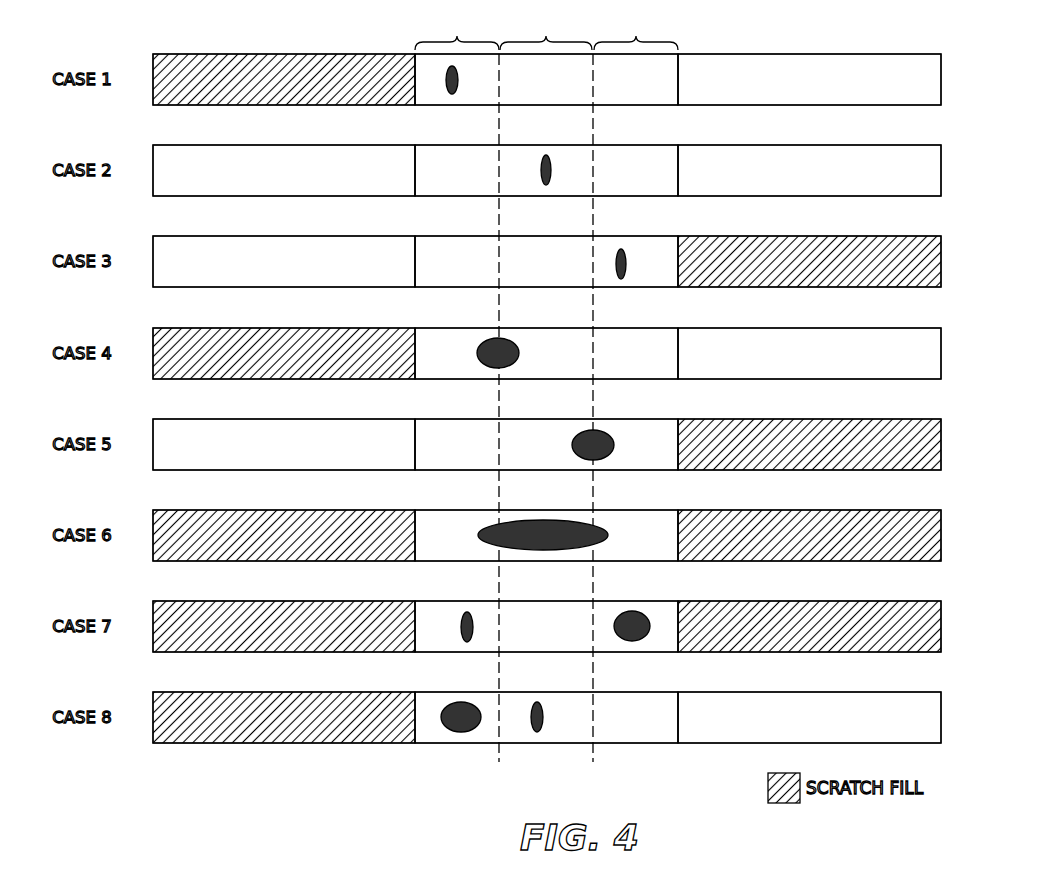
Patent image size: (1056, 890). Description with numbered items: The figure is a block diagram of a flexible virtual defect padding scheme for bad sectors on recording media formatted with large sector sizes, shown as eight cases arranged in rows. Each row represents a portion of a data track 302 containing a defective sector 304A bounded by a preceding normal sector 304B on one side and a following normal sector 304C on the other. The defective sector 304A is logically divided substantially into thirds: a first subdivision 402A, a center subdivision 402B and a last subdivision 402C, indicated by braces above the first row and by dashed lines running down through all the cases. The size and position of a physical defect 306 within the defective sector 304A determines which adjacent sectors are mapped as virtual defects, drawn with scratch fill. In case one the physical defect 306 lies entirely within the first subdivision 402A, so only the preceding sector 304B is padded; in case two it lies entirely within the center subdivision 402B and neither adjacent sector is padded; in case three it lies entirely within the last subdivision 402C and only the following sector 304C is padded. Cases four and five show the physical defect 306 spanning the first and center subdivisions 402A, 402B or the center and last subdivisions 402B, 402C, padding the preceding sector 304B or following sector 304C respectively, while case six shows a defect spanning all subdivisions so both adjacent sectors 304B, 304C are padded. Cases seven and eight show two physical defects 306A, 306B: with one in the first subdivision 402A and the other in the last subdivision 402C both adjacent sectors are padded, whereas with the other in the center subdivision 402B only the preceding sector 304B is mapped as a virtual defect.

The data track 302 is at (968, 80).
The defective sector 304A is at (526, 90).
The preceding sector 304B is at (264, 90).
The following sector 304C is at (790, 90).
The physical defect 306 is at (455, 93).
The first physical defect 306A is at (463, 617).
The second physical defect 306B is at (638, 620).
The first subdivision 402A is at (457, 31).
The center subdivision 402B is at (546, 387).
The last subdivision 402C is at (636, 31).